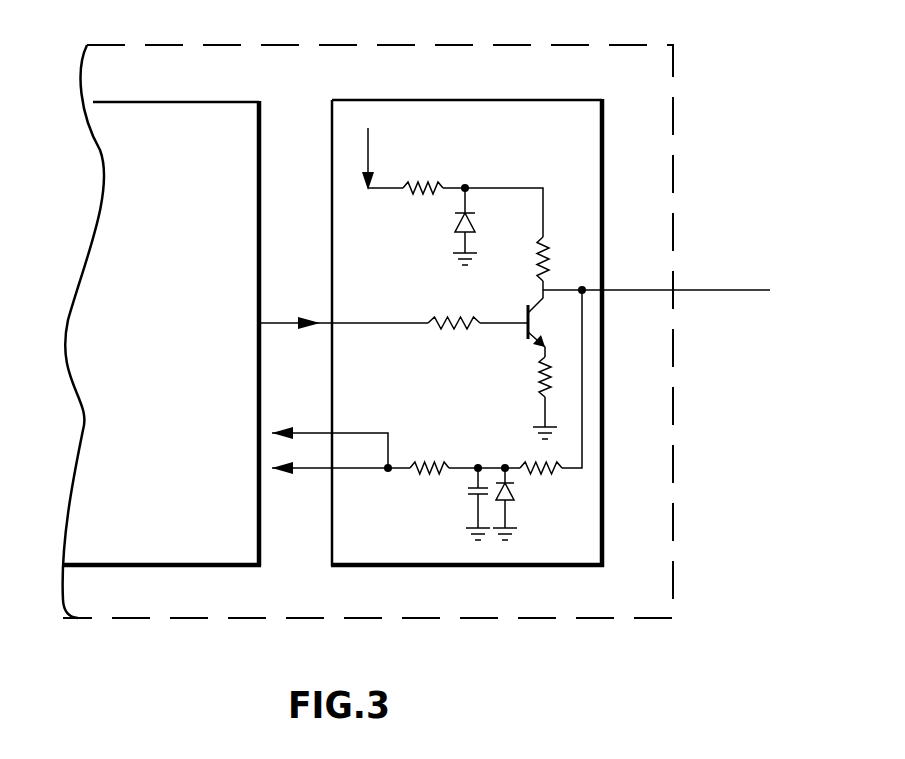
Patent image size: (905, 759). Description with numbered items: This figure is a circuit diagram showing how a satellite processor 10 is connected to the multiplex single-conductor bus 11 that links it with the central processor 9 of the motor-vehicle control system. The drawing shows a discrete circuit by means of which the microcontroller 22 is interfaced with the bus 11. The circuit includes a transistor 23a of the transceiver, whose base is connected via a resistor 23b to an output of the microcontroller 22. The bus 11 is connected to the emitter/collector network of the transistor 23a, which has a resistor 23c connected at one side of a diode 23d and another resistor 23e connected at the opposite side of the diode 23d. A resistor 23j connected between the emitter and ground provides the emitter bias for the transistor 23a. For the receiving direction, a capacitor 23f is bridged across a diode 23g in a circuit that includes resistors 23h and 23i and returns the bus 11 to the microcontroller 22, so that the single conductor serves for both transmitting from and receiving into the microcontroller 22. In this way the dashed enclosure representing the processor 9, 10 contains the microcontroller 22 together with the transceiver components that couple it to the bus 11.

The central processor 9 is at (419, 320).
The satellite processor 10 is at (673, 66).
The multiplex single-conductor bus 11 is at (733, 290).
The microcontroller 22 is at (178, 478).
The transistor 23a is at (530, 333).
The resistor 23b is at (446, 320).
The resistor 23c is at (420, 188).
The diode 23d is at (460, 226).
The resistor 23e is at (538, 250).
The capacitor 23f is at (470, 490).
The diode 23g is at (517, 490).
The resistor 23h is at (425, 462).
The resistor 23i is at (534, 463).
The resistor 23j is at (543, 372).